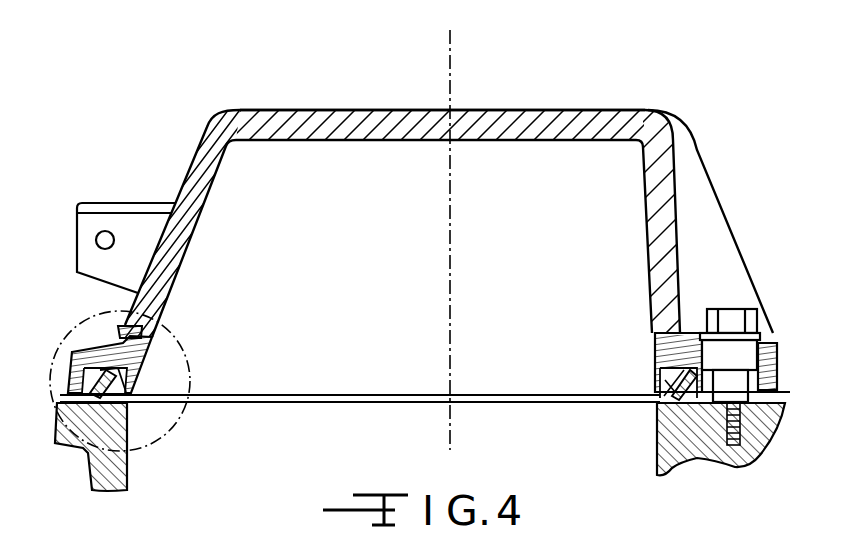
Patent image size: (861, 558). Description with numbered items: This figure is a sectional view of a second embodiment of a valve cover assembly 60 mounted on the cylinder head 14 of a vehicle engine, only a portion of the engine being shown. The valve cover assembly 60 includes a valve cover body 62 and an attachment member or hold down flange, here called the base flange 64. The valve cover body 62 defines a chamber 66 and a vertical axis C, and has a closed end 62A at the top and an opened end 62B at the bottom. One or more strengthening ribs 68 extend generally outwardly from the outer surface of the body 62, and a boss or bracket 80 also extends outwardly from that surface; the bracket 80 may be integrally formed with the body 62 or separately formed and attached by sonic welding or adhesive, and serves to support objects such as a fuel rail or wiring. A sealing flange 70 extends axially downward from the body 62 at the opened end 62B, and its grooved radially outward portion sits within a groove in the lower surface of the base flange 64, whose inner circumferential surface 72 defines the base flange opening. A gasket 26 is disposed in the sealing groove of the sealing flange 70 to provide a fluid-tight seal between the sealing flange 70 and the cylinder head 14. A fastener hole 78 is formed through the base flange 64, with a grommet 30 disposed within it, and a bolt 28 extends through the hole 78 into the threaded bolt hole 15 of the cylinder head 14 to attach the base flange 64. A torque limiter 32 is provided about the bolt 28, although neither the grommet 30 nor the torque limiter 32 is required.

The valve cover assembly 60 is at (430, 230).
The valve cover body 62 is at (524, 104).
The closed end 62A is at (405, 122).
The opened end 62B is at (426, 384).
The chamber 66 is at (358, 157).
The strengthening ribs 68 is at (700, 186).
The bracket 80 is at (95, 222).
The sealing flange 70 is at (150, 370).
The inner circumferential surface 72 is at (145, 337).
The base flange 64 is at (60, 364).
The cylinder head 14 is at (128, 450).
The threaded bolt hole 15 is at (745, 446).
The grommet 30 is at (660, 352).
The gasket 26 is at (665, 398).
The bolt 28 is at (735, 322).
The torque limiter 32 is at (770, 338).
The fastener hole 78 is at (778, 391).
The vertical axis C is at (452, 66).